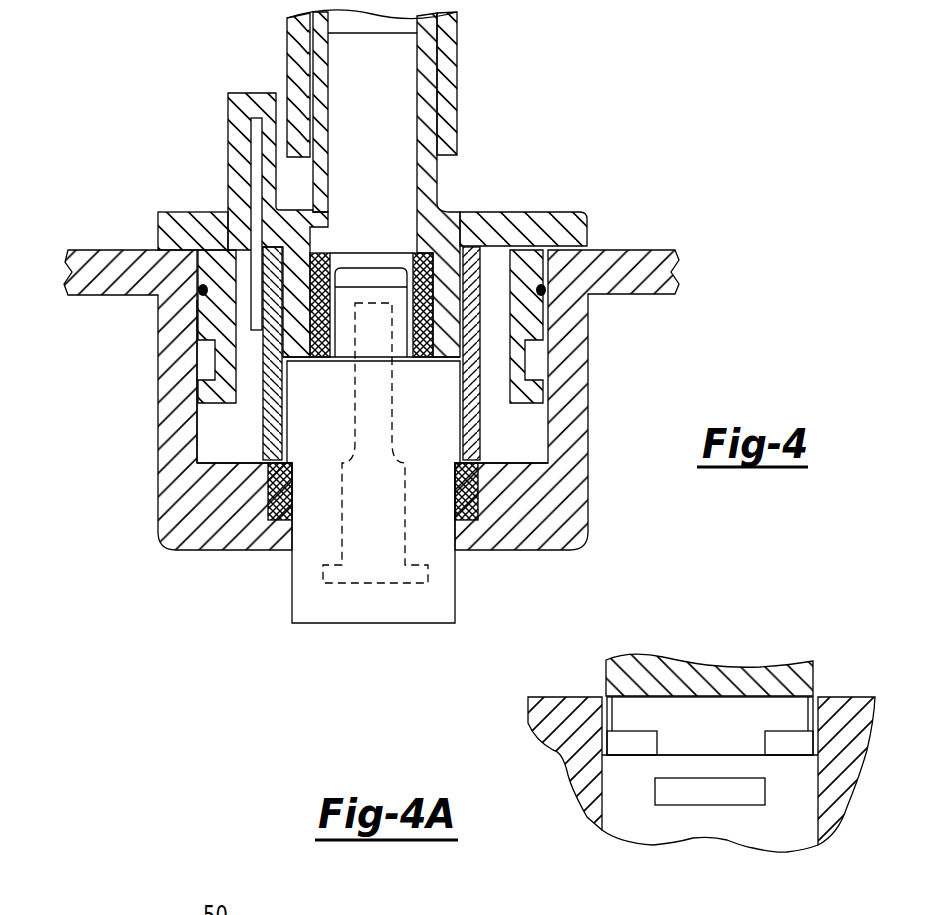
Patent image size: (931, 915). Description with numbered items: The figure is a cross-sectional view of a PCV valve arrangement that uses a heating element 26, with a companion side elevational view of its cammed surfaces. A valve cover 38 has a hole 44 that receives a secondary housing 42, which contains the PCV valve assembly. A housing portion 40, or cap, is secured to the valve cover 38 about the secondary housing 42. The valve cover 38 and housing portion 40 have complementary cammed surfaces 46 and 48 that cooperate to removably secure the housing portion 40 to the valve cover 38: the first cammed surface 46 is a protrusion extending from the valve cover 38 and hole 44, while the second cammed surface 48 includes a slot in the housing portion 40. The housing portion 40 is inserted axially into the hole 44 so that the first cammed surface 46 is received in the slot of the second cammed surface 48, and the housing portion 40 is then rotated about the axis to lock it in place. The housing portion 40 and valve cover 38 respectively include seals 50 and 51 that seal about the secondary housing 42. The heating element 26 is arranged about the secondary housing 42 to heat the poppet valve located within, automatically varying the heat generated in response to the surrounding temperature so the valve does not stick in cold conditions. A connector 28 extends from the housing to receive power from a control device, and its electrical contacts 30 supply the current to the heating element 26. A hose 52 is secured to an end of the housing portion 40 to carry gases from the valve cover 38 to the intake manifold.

In FIG. 4, the heating element 26 is at (494, 283).
In FIG. 4, the connector 28 is at (235, 105).
In FIG. 4, the electrical contacts 30 is at (224, 268).
In FIG. 4, the valve cover 38 is at (583, 492).
In FIG. 4A, the valve cover 38 is at (828, 828).
In FIG. 4, the housing portion 40 is at (180, 218).
In FIG. 4A, the housing portion 40 is at (770, 677).
In FIG. 4, the secondary housing 42 is at (415, 612).
In FIG. 4, the hole 44 is at (202, 430).
In FIG. 4A, the first cammed surface 46 is at (727, 798).
In FIG. 4A, the second cammed surface 48 is at (654, 712).
In FIG. 4, the seal 50 is at (450, 240).
In FIG. 4, the seal 51 is at (273, 503).
In FIG. 4, the hose 52 is at (450, 75).